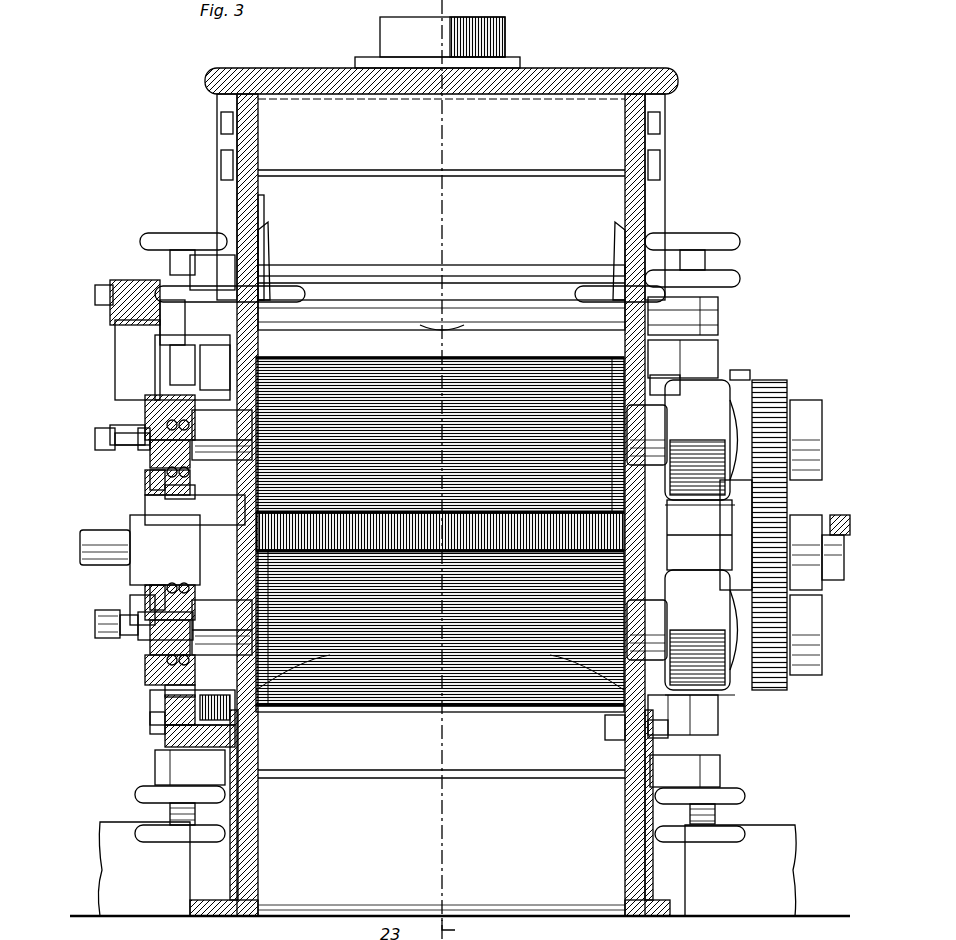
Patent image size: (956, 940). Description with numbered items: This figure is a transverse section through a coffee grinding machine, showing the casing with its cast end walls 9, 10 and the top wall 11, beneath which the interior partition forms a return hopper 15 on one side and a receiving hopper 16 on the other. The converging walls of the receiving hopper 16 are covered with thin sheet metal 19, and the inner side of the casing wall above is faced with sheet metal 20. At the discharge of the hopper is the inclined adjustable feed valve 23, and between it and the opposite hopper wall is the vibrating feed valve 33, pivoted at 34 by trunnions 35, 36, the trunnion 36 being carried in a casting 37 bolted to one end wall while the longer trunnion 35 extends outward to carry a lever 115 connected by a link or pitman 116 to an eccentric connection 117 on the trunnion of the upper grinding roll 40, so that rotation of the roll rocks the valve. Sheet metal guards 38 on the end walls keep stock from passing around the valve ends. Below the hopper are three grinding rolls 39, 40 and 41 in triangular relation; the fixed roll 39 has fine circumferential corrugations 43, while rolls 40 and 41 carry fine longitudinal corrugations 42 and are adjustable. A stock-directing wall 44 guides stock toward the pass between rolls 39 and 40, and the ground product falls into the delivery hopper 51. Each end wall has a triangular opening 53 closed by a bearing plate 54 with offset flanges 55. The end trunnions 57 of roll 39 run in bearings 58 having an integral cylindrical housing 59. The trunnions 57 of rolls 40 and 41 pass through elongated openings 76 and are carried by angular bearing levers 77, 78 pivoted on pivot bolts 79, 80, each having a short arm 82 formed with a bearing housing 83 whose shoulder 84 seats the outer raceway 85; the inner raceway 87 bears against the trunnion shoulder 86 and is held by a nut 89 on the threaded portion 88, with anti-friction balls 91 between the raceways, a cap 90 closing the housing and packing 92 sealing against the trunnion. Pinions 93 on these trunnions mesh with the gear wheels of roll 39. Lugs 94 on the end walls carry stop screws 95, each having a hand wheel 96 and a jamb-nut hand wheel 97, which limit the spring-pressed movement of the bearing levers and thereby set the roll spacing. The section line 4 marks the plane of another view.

The section line 4 is at (455, 930).
The end wall 9 is at (240, 157).
The end wall 10 is at (632, 168).
The top wall 11 is at (300, 76).
The return hopper 15 is at (800, 548).
The receiving hopper 16 is at (418, 165).
The sheet metal 19 is at (296, 213).
The sheet metal 20 is at (288, 135).
The adjustable feed valve 23 is at (382, 268).
The vibrating feed valve 33 is at (455, 270).
The pivot 34 is at (272, 292).
The trunnion 35 is at (165, 330).
The trunnion 36 is at (720, 312).
The casting 37 is at (720, 326).
The sheet metal guards 38 is at (272, 230).
The grinding roll 39 is at (640, 533).
The grinding roll 40 is at (488, 370).
The grinding roll 41 is at (496, 713).
The roll surface 42 is at (540, 405).
The circumferential corrugations 43 is at (262, 535).
The stock-directing wall 44 is at (330, 346).
The delivery hopper 51 is at (441, 789).
The triangular opening 53 is at (612, 372).
The bearing plates 54 is at (190, 505).
The offset flanges 55 is at (195, 362).
The end trunnions 57 is at (838, 578).
The bearings 58 is at (120, 570).
The cylindrical housing 59 is at (160, 512).
The elongated openings 76 is at (260, 398).
The bearing levers 77 is at (172, 355).
The bearing levers 78 is at (170, 740).
The pivot bolts 79 is at (150, 400).
The pivot bolts 80 is at (150, 714).
The short arm 82 is at (150, 695).
The bearing housing 83 is at (148, 485).
The shoulder 84 is at (222, 540).
The outer raceway 85 is at (160, 490).
The outwardly-facing shoulder 86 is at (138, 440).
The inner raceway 87 is at (95, 438).
The threaded portion 88 is at (118, 440).
The nut 89 is at (148, 410).
The cap 90 is at (110, 430).
The anti-friction balls 91 is at (150, 478).
The packing 92 is at (120, 595).
The pinions 93 is at (810, 430).
The lugs 94 is at (190, 275).
The stop screws 95 is at (185, 270).
The hand wheel 96 is at (160, 238).
The hand wheel 97 is at (195, 250).
The lever 115 is at (120, 288).
The link or pitman 116 is at (118, 328).
The eccentric connection 117 is at (95, 438).